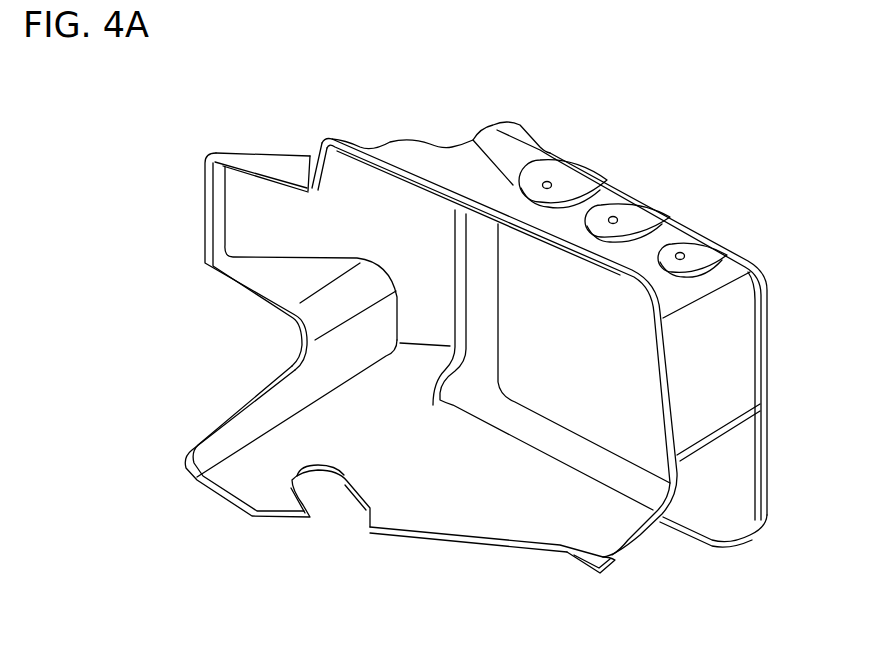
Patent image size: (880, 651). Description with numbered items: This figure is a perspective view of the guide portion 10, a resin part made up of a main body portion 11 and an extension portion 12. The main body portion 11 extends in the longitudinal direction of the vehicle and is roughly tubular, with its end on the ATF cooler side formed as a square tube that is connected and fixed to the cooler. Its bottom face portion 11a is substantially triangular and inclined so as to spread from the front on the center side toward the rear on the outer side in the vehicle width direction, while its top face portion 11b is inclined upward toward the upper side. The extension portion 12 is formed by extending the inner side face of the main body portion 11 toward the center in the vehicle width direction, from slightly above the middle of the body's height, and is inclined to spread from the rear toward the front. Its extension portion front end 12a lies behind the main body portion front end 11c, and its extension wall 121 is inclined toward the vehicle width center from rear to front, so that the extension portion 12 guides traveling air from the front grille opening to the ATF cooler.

The guide portion 10 is at (596, 134).
The main body portion 11 is at (751, 369).
The bottom face portion 11a is at (477, 512).
The top face portion 11b is at (430, 143).
The main body portion front end 11c is at (215, 495).
The extension portion 12 is at (235, 213).
The extension portion front end 12a is at (245, 150).
The extension wall 121 is at (298, 150).